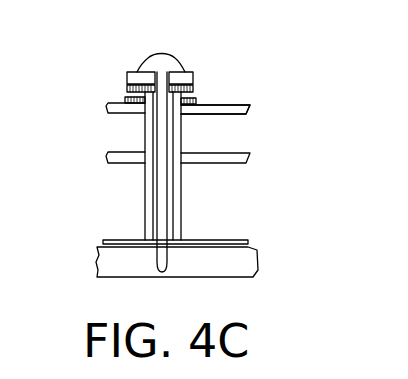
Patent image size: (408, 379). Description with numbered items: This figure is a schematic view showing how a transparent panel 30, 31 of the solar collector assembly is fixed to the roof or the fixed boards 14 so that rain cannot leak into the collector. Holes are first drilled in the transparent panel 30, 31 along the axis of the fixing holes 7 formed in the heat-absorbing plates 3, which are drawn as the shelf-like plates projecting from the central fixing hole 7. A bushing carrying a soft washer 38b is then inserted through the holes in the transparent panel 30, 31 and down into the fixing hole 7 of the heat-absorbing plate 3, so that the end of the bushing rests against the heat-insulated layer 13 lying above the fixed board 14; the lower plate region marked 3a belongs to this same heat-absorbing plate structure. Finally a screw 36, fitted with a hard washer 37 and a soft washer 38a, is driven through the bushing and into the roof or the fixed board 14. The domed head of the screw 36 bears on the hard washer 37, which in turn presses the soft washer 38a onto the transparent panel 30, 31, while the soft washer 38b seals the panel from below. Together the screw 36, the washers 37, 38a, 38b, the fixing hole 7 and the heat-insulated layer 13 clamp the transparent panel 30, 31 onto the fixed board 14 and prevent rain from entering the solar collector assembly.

The screw 36 is at (165, 52).
The hard washer 37 is at (188, 72).
The soft washer 38a is at (194, 88).
The soft washer 38b is at (125, 101).
The fixing hole 7 is at (145, 147).
The transparent panel 30 is at (250, 108).
The transparent panel 31 is at (215, 109).
The heat-absorbing plate 3 is at (250, 157).
The lower left shelf plate 3a is at (145, 177).
The heat-insulated layer 13 is at (248, 242).
The fixed board 14 is at (262, 265).